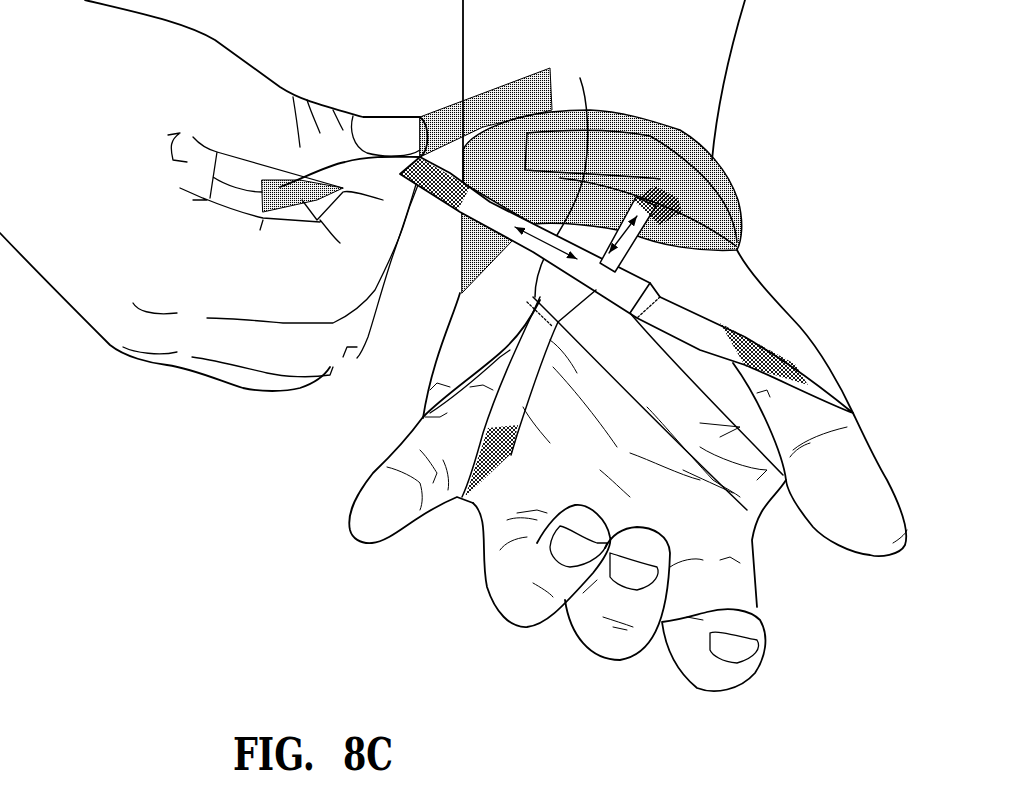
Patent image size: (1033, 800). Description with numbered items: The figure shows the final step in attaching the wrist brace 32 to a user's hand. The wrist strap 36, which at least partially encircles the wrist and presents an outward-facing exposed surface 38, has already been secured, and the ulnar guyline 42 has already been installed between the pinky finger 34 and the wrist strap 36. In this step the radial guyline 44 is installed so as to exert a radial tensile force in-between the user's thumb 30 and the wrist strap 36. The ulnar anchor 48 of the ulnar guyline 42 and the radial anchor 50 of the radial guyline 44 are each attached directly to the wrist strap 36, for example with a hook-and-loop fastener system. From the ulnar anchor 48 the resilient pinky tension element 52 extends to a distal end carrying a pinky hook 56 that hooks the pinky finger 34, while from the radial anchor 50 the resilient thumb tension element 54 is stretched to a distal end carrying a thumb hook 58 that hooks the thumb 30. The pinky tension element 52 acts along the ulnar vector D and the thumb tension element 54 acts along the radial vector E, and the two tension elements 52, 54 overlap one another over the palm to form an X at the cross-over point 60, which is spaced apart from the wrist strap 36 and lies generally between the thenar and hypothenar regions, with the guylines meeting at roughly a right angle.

The thumb 30 is at (887, 480).
The wrist brace 32 is at (767, 238).
The pinky finger 34 is at (357, 527).
The wrist strap 36 is at (667, 117).
The exposed surface 38 is at (713, 160).
The ulnar guyline 42 is at (533, 297).
The radial guyline 44 is at (747, 328).
The ulnar anchor 48 is at (737, 221).
The radial anchor 50 is at (438, 110).
The pinky tension element 52 is at (633, 238).
The thumb tension element 54 is at (467, 263).
The pinky hook 56 is at (500, 450).
The thumb hook 58 is at (735, 427).
The cross-over point 60 is at (596, 292).
The ulnar vector D is at (623, 257).
The radial vector E is at (561, 174).